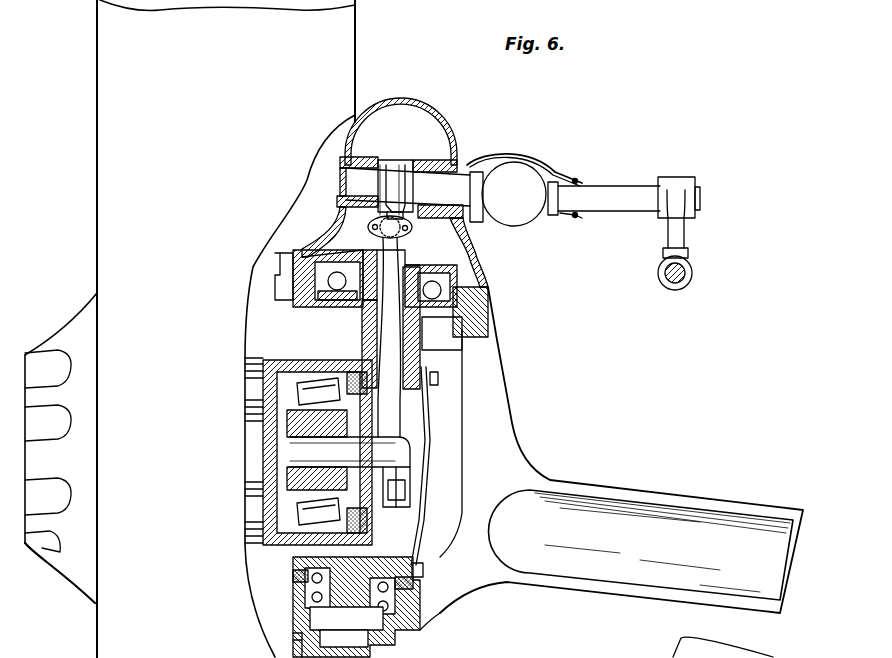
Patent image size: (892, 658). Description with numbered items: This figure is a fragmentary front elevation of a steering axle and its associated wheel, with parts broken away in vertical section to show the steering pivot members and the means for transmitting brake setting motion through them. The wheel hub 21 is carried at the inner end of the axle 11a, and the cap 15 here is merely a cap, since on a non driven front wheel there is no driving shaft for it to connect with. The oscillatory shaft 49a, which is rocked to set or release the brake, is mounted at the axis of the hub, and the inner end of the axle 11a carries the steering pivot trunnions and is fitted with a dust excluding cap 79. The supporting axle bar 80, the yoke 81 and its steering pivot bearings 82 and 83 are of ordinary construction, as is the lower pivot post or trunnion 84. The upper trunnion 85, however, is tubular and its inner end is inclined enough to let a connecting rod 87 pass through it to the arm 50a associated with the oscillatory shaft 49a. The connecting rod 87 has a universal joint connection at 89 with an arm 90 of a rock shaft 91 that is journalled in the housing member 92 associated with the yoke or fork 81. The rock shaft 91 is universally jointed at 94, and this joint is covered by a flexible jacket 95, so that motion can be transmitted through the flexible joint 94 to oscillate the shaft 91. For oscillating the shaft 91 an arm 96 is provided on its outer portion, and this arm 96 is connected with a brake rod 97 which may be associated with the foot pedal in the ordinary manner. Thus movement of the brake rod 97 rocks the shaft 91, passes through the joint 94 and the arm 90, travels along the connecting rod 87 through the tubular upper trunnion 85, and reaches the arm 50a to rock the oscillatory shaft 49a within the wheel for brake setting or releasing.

The cap 15 is at (77, 565).
The axle 11a is at (265, 436).
The wheel hub 21 is at (307, 364).
The oscillatory shaft 49a is at (350, 450).
The arm 50a is at (402, 498).
The dust excluding cap 79 is at (417, 513).
The supporting axle bar 80 is at (640, 573).
The yoke 81 is at (492, 405).
The steering pivot bearing 82 is at (477, 302).
The steering pivot bearing 83 is at (413, 630).
The lower pivot post or trunnion 84 is at (338, 600).
The upper trunnion 85 is at (422, 333).
The connecting rod 87 is at (395, 402).
The universal joint connection 89 is at (392, 232).
The arm 90 is at (394, 192).
The rock shaft 91 is at (414, 195).
The housing member 92 is at (447, 130).
The universal joint 94 is at (513, 172).
The flexible jacket 95 is at (537, 168).
The arm 96 is at (678, 232).
The brake rod 97 is at (682, 279).